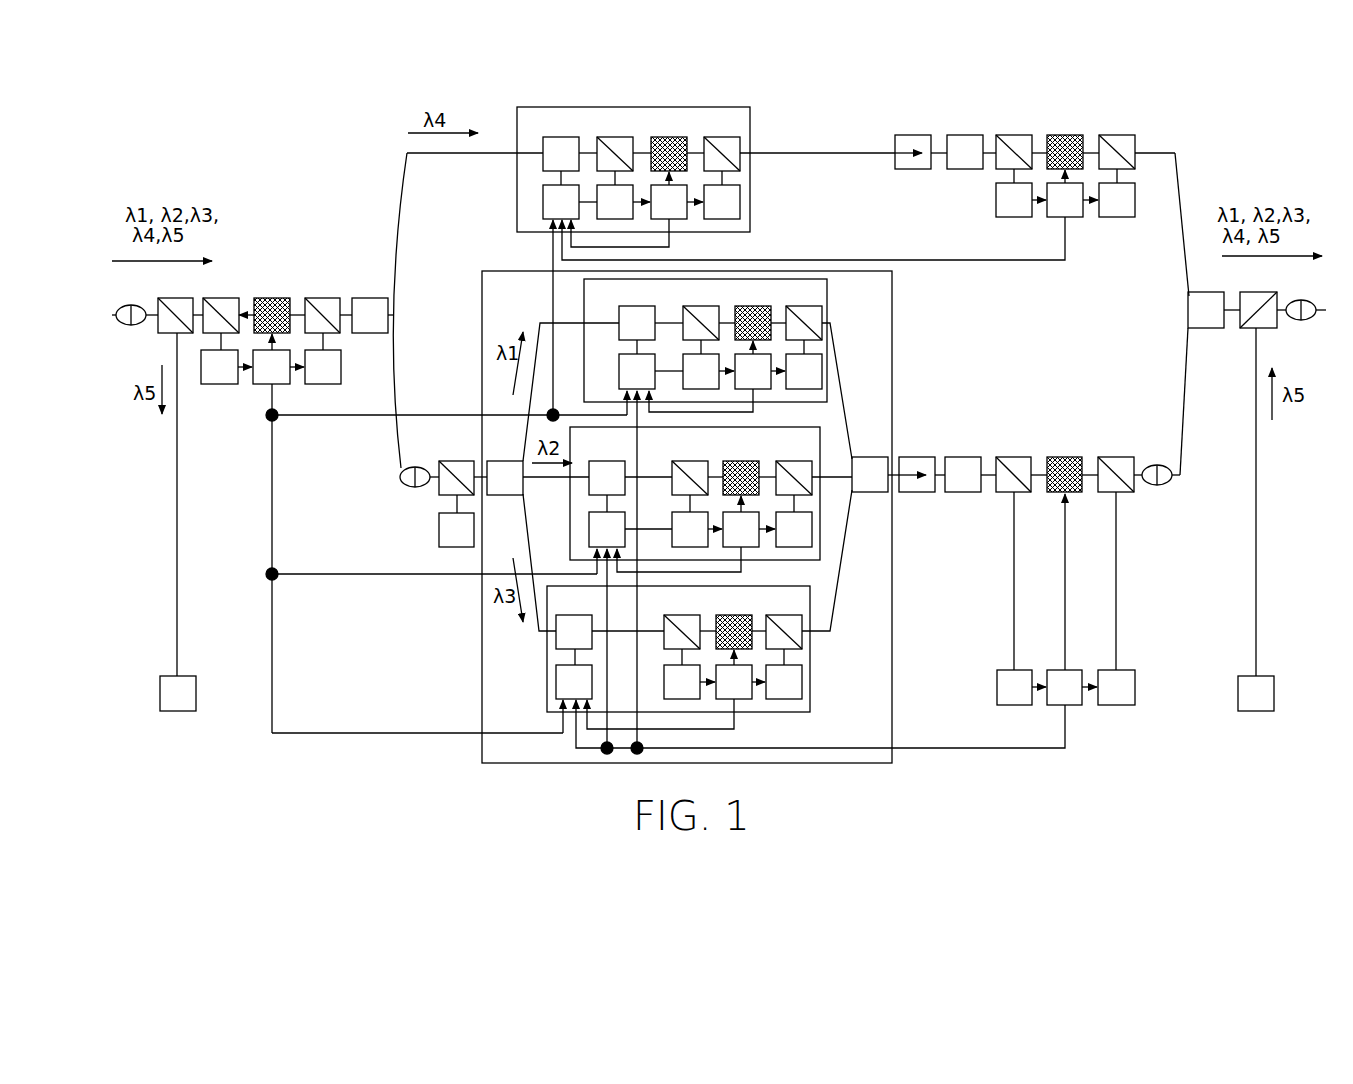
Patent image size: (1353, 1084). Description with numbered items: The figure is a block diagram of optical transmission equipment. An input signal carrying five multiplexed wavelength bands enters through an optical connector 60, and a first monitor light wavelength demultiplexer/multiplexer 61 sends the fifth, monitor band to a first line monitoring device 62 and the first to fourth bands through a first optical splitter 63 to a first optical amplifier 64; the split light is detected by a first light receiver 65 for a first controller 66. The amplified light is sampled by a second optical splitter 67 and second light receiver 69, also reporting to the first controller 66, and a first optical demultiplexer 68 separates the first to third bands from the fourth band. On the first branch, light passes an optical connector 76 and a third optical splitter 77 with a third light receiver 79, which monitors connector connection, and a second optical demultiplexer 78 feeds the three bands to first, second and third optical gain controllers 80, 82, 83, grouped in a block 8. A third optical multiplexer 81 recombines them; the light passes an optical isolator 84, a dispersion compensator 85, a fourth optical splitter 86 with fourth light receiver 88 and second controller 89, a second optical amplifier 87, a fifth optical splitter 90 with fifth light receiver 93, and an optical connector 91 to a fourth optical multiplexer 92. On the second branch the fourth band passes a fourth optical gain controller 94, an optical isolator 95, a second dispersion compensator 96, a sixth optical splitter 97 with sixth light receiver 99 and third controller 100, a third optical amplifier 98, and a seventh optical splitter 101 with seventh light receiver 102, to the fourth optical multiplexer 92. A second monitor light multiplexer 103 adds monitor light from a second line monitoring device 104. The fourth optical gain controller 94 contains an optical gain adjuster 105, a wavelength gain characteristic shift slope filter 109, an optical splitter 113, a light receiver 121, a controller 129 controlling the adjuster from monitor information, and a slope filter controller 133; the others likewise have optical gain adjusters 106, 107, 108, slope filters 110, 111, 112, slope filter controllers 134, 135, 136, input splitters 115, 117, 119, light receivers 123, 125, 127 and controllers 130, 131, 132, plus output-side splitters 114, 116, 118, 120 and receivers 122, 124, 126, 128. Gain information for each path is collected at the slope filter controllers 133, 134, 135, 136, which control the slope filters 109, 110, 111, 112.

The optical add/drop processing unit 8 is at (687, 517).
The optical connector 60 is at (131, 303).
The first monitor light wavelength demultiplexer/multiplexer 61 is at (175, 303).
The first line monitoring device 62 is at (178, 693).
The first optical splitter 63 is at (221, 303).
The first optical amplifier 64 is at (272, 303).
The first light receiver 65 is at (219, 367).
The first controller 66 is at (271, 367).
The second optical splitter 67 is at (322, 303).
The first optical demultiplexer 68 is at (370, 315).
The second light receiver 69 is at (323, 367).
The optical connector 76 is at (415, 489).
The third optical splitter 77 is at (456, 465).
The second optical demultiplexer 78 is at (505, 478).
The third light receiver 79 is at (456, 530).
The first optical gain controller 80 is at (705, 340).
The third optical multiplexer 81 is at (870, 474).
The second optical gain controller 82 is at (695, 493).
The third optical gain controller 83 is at (678, 649).
The optical isolator 84 is at (917, 488).
The dispersion compensator 85 is at (963, 474).
The fourth optical splitter 86 is at (1013, 462).
The second optical amplifier 87 is at (1064, 462).
The fourth light receiver 88 is at (1014, 687).
The second controller 89 is at (1064, 687).
The fifth optical splitter 90 is at (1116, 462).
The optical connector 91 is at (1157, 489).
The fourth optical multiplexer 92 is at (1206, 310).
The fifth light receiver 93 is at (1116, 687).
The fourth optical gain controller 94 is at (633, 169).
The optical isolator 95 is at (913, 166).
The second dispersion compensator 96 is at (965, 152).
The sixth optical splitter 97 is at (1014, 139).
The third optical amplifier 98 is at (1065, 139).
The sixth light receiver 99 is at (1014, 200).
The third controller 100 is at (1065, 200).
The seventh optical splitter 101 is at (1118, 139).
The seventh light receiver 102 is at (1117, 200).
The second monitor light multiplexer 103 is at (1257, 297).
The second line monitoring device 104 is at (1256, 693).
The optical gain adjuster 105 is at (669, 141).
The optical gain adjuster 106 is at (753, 310).
The optical gain adjuster 107 is at (741, 465).
The optical gain adjuster 108 is at (734, 619).
The wavelength gain characteristic shift slope filter 109 is at (561, 154).
The wavelength gain characteristic shift slope filter 110 is at (637, 323).
The wavelength gain characteristic shift slope filter 111 is at (607, 478).
The wavelength gain characteristic shift slope filter 112 is at (574, 632).
The optical splitter 113 is at (615, 141).
The output tap coupler 114 is at (722, 141).
The input tap coupler 115 is at (701, 310).
The output tap coupler 116 is at (805, 310).
The input tap coupler 117 is at (690, 465).
The output tap coupler 118 is at (794, 465).
The input tap coupler 119 is at (682, 619).
The output tap coupler 120 is at (785, 619).
The light receiver 121 is at (615, 202).
The output photodetector 122 is at (722, 202).
The input photodetector 123 is at (701, 371).
The output photodetector 124 is at (804, 371).
The input photodetector 125 is at (690, 529).
The output photodetector 126 is at (794, 529).
The input photodetector 127 is at (682, 682).
The output photodetector 128 is at (784, 682).
The controller 129 is at (669, 202).
The attenuator controller 130 is at (753, 371).
The attenuator controller 131 is at (741, 529).
The attenuator controller 132 is at (734, 682).
The wavelength gain characteristic shift slope filter controller 133 is at (561, 202).
The wavelength gain characteristic shift slope filter controller 134 is at (637, 371).
The wavelength gain characteristic shift slope filter controller 135 is at (607, 529).
The wavelength gain characteristic shift slope filter controller 136 is at (574, 682).